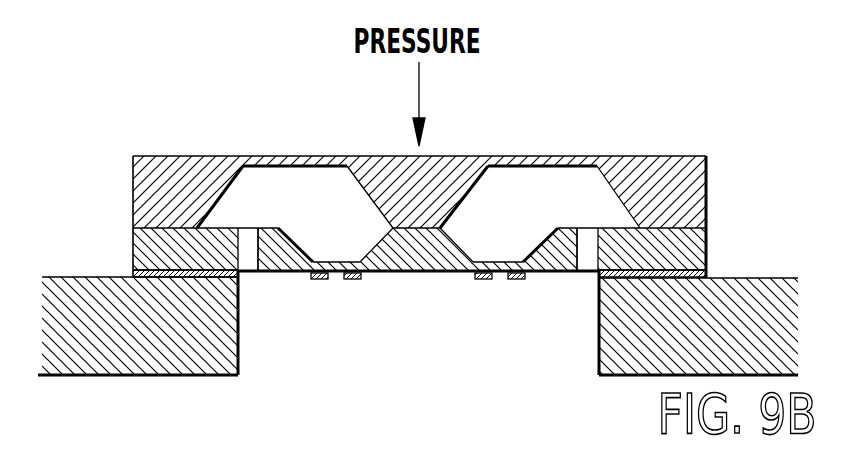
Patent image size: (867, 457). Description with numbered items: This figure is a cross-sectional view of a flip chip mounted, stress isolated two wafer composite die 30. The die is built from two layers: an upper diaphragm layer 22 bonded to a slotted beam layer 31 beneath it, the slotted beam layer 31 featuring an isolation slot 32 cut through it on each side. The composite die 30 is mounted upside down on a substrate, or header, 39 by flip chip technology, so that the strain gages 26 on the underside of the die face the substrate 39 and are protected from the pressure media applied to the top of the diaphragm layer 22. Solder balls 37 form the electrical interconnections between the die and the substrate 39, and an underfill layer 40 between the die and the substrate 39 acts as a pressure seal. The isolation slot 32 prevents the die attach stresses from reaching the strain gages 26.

The composite die 30 is at (223, 127).
The diaphragm layer 22 is at (196, 157).
The isolation slot 32 is at (248, 233).
The slotted beam layer 31 is at (692, 238).
The solder balls 37 is at (683, 272).
The underfill layer 40 is at (133, 271).
The substrate 39 is at (108, 298).
The strain gages 26 is at (516, 281).